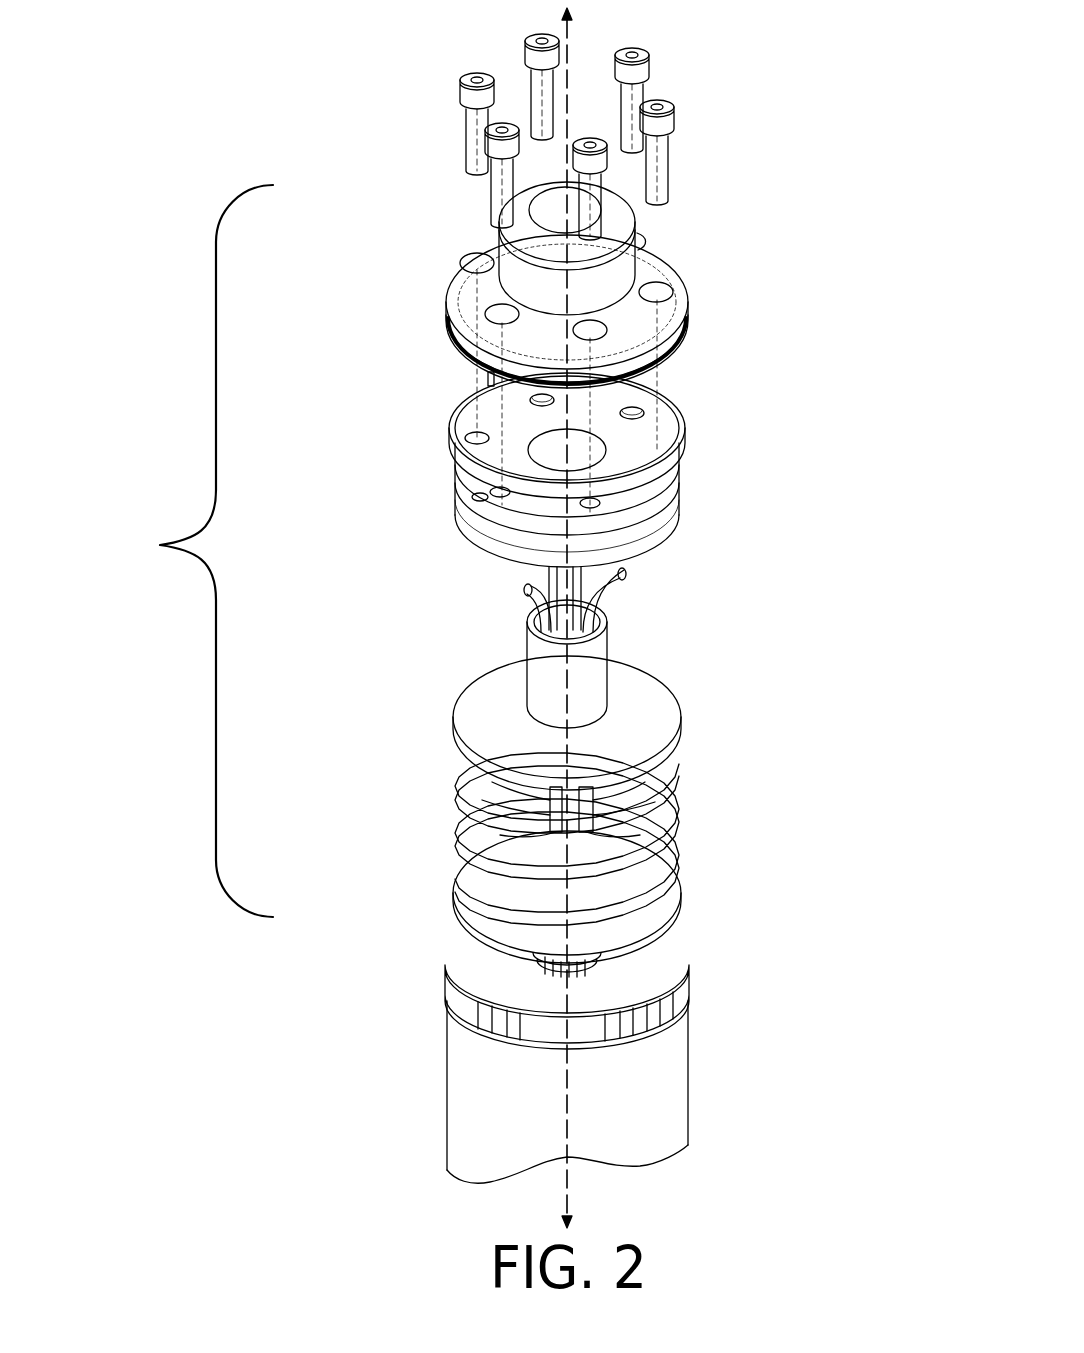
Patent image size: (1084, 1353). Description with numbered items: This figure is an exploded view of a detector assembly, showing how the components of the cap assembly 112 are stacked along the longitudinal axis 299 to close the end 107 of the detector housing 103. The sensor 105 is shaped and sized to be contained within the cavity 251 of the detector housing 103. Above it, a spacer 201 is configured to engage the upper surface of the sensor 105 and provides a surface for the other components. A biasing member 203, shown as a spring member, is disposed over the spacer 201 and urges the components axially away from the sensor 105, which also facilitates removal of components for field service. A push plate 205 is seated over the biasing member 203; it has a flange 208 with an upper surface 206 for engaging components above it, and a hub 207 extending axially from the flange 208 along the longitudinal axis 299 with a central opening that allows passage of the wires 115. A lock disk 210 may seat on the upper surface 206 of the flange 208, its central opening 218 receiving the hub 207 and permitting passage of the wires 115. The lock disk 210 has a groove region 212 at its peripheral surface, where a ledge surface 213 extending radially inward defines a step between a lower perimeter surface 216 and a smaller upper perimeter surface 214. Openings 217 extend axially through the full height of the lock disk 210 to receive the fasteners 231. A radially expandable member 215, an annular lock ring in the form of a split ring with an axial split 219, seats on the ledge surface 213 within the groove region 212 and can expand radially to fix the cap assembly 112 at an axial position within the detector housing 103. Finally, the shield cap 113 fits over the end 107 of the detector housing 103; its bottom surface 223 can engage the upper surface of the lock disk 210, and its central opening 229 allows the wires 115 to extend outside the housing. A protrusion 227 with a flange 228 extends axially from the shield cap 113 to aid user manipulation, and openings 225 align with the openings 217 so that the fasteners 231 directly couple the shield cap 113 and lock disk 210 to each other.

The longitudinal axis 299 is at (569, 47).
The cap assembly 112 is at (190, 551).
The fasteners 231 is at (493, 210).
The central opening 229 is at (562, 210).
The flange 228 is at (518, 247).
The protrusion 227 is at (565, 205).
The openings 225 is at (587, 330).
The shield cap 113 is at (590, 304).
The bottom surface 223 is at (663, 371).
The split 219 is at (490, 378).
The openings 217 is at (633, 411).
The central opening 218 is at (550, 457).
The radially expandable member 215 is at (586, 435).
The upper perimeter surface 214 is at (660, 488).
The ledge surface 213 is at (560, 498).
The groove region 212 is at (475, 497).
The lower perimeter surface 216 is at (660, 517).
The lock disk 210 is at (458, 523).
The wires 115 is at (610, 582).
The hub 207 is at (602, 697).
The upper surface 206 is at (487, 725).
The push plate 205 is at (557, 723).
The flange 208 is at (482, 738).
The biasing member 203 is at (670, 865).
The spacer 201 is at (660, 903).
The cavity 251 is at (467, 995).
The end 107 is at (438, 982).
The sensor 105 is at (670, 978).
The detector housing 103 is at (471, 1061).